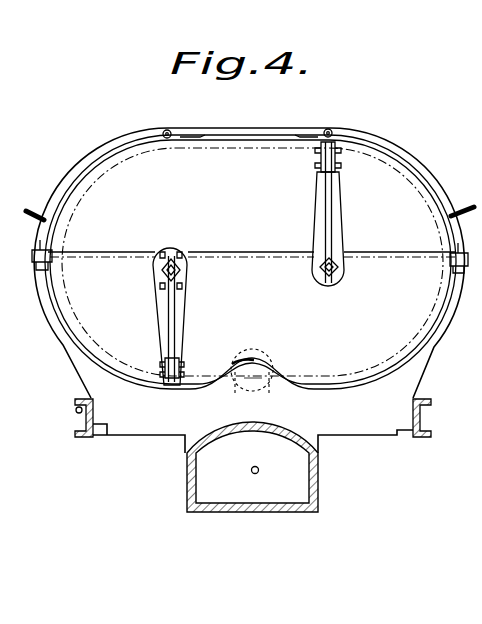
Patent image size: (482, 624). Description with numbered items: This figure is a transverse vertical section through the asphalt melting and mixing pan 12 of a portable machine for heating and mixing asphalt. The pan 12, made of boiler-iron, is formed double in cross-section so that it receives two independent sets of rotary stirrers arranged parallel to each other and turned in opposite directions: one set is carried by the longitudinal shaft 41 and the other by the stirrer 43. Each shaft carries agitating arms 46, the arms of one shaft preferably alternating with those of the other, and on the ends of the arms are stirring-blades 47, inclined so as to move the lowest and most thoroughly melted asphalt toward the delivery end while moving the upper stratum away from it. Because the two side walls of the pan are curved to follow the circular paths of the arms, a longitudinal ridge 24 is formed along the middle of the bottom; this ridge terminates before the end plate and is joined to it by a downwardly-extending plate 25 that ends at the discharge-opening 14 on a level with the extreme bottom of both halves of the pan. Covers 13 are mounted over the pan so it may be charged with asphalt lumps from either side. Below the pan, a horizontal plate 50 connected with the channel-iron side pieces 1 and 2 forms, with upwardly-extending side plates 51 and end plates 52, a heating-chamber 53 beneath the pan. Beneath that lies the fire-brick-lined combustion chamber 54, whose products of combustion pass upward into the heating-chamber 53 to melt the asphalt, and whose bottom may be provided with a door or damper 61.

The longitudinal side piece 1 is at (76, 417).
The longitudinal side piece 2 is at (430, 413).
The asphalt melting and mixing pan 12 is at (250, 259).
The cover 13 is at (250, 213).
The discharge-opening 14 is at (260, 358).
The longitudinal ridge 24 is at (270, 365).
The downwardly-extending plate 25 is at (253, 378).
The longitudinal shaft 41 is at (182, 255).
The stirrer 43 is at (320, 268).
The agitating arm 46 is at (162, 313).
The stirring-blade 47 is at (180, 377).
The horizontal plate 50 is at (138, 437).
The side plate 51 is at (72, 370).
The end plate 52 is at (127, 407).
The heating-chamber 53 is at (206, 408).
The combustion chamber 54 is at (252, 467).
The door or damper 61 is at (258, 472).